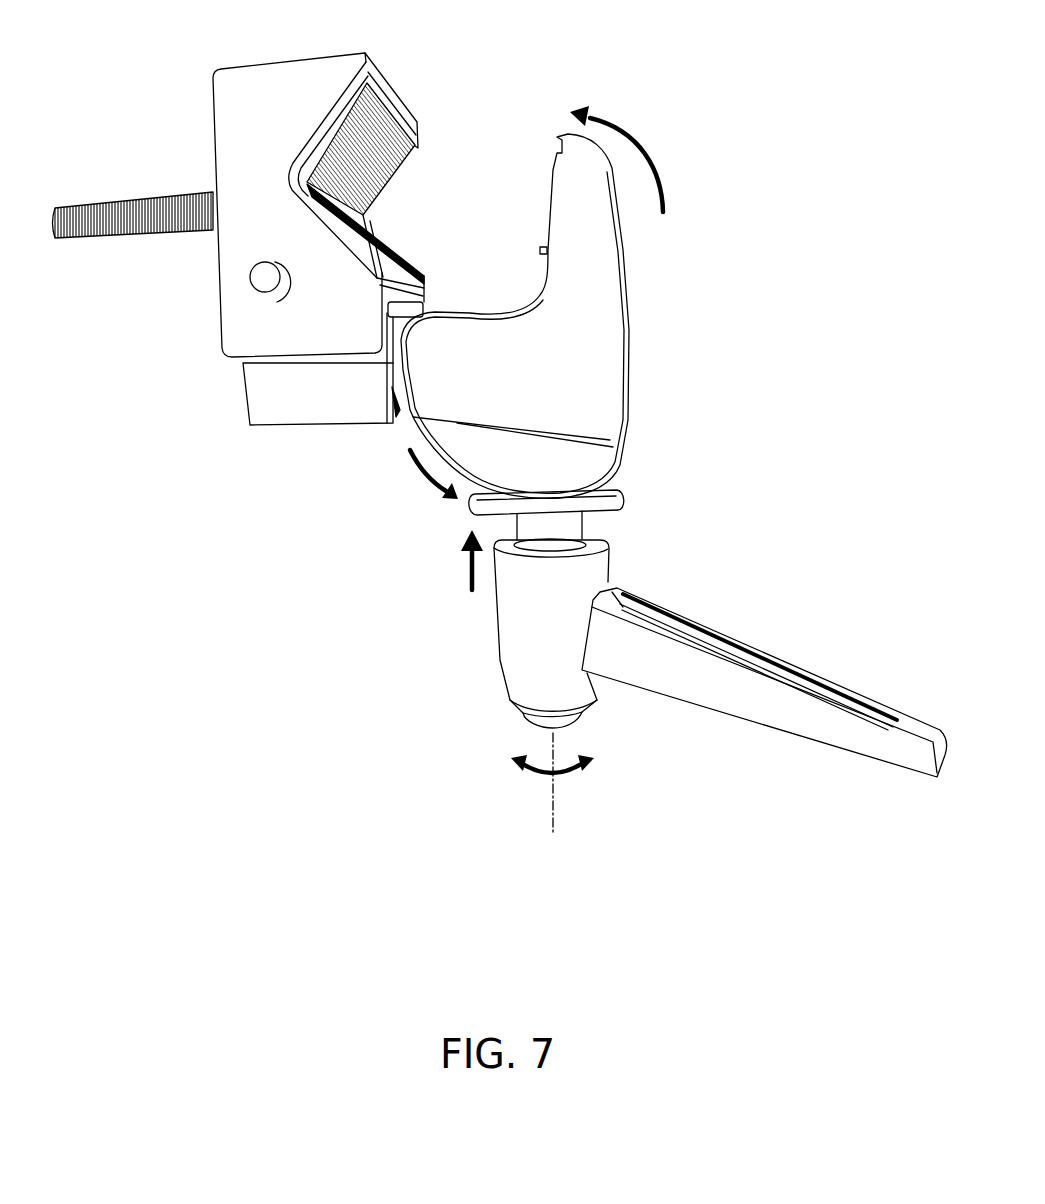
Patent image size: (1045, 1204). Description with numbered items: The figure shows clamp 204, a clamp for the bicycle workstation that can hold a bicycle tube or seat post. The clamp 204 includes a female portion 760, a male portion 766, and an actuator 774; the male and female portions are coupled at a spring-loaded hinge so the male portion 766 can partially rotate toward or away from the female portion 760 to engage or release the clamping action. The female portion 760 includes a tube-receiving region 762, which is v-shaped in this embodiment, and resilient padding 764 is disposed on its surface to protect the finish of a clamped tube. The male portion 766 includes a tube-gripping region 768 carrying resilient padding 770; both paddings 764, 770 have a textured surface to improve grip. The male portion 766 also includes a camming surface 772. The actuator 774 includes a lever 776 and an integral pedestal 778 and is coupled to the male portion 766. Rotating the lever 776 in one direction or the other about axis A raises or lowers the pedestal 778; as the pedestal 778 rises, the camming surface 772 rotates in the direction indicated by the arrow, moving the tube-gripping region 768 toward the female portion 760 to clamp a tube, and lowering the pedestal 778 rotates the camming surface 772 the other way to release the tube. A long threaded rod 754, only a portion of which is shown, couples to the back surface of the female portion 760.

The clamp 204 is at (748, 158).
The threaded rod 754 is at (115, 197).
The female portion 760 is at (424, 90).
The tube-receiving region 762 is at (415, 214).
The padding 764 is at (425, 292).
The male portion 766 is at (648, 345).
The tube-gripping region 768 is at (513, 187).
The padding 770 is at (552, 170).
The camming surface 772 is at (413, 428).
The actuator 774 is at (648, 552).
The lever 776 is at (708, 637).
The pedestal 778 is at (620, 497).